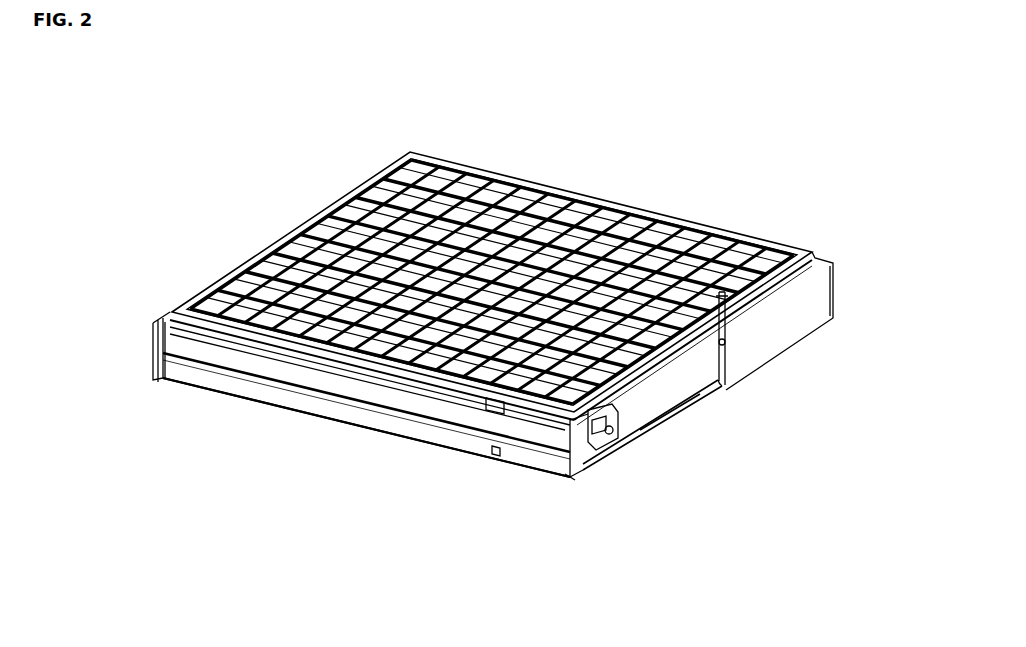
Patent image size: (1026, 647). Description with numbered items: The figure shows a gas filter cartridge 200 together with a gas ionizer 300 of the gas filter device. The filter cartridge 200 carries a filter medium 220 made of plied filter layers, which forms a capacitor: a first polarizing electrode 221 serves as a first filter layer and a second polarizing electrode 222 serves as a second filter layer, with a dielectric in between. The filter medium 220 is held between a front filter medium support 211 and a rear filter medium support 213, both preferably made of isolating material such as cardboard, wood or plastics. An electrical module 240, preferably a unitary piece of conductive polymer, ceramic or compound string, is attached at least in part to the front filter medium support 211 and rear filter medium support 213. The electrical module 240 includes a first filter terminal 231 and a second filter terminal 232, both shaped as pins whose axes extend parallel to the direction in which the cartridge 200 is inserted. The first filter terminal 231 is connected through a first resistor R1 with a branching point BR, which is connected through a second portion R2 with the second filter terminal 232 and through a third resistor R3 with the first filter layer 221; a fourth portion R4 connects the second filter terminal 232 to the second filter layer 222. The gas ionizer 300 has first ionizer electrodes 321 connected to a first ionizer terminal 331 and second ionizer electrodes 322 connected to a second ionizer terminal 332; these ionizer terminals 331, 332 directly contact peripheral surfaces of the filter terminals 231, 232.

The filter cartridge 200 is at (188, 394).
The front filter medium support 211 is at (170, 312).
The rear filter medium support 213 is at (822, 290).
The filter medium 220 is at (267, 395).
The first polarizing electrode 221 is at (353, 382).
The second polarizing electrode 222 is at (424, 430).
The first filter terminal 231 is at (733, 343).
The second filter terminal 232 is at (601, 448).
The electrical module 240 is at (657, 436).
The gas ionizer 300 is at (296, 214).
The first ionizer electrodes 321 is at (543, 185).
The second ionizer electrodes 322 is at (445, 166).
The first ionizer terminal 331 is at (740, 272).
The second ionizer terminal 332 is at (590, 440).
The branching point BR is at (572, 488).
The first resistor R1 is at (680, 413).
The second portion R2 is at (614, 445).
The third resistor R3 is at (520, 477).
The fourth portion R4 is at (498, 406).